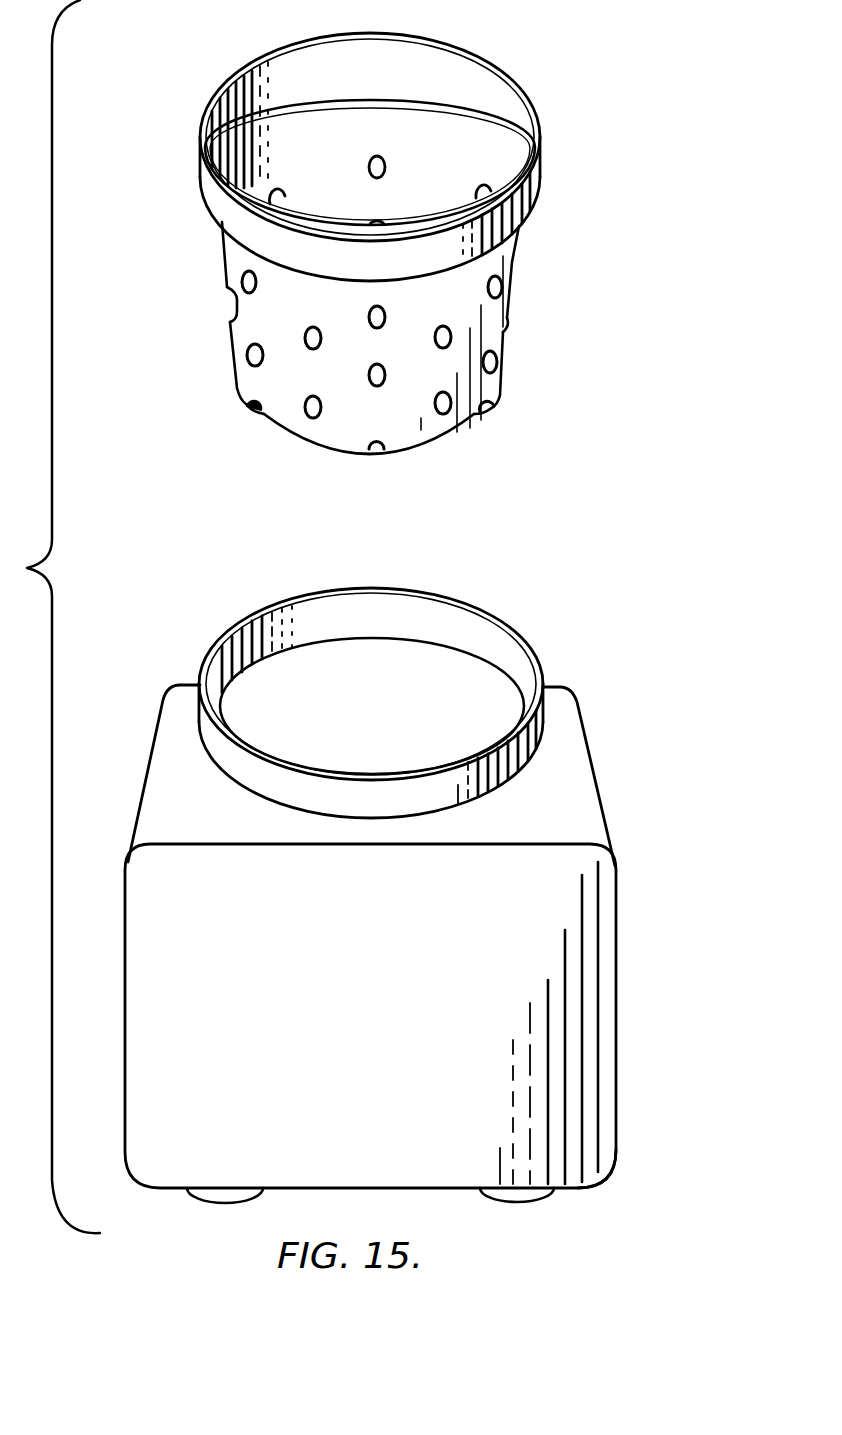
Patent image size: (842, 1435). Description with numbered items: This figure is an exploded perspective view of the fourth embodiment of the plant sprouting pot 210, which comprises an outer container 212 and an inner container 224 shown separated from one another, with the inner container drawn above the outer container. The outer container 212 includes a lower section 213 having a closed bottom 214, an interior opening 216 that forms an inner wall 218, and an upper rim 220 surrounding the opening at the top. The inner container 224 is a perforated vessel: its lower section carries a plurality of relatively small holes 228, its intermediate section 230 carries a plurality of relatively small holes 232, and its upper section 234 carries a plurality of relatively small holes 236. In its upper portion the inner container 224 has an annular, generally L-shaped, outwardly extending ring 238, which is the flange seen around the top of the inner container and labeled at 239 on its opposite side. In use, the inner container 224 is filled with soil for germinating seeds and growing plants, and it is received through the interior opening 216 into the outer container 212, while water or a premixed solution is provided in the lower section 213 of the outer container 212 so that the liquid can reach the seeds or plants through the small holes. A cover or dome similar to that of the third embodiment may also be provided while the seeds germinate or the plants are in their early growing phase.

The plant sprouting pot 210 is at (552, 652).
The outer container 212 is at (633, 917).
The lower section 213 is at (614, 1165).
The closed bottom 214 is at (457, 1190).
The interior opening 216 is at (498, 609).
The inner wall 218 is at (330, 668).
The upper rim 220 is at (212, 660).
The inner container 224 is at (318, 321).
The holes 228 is at (247, 354).
The intermediate section 230 is at (512, 262).
The holes 232 is at (242, 277).
The upper section 234 is at (238, 268).
The holes 236 is at (233, 305).
The ring 238 is at (197, 180).
The rim flange 239 is at (530, 215).